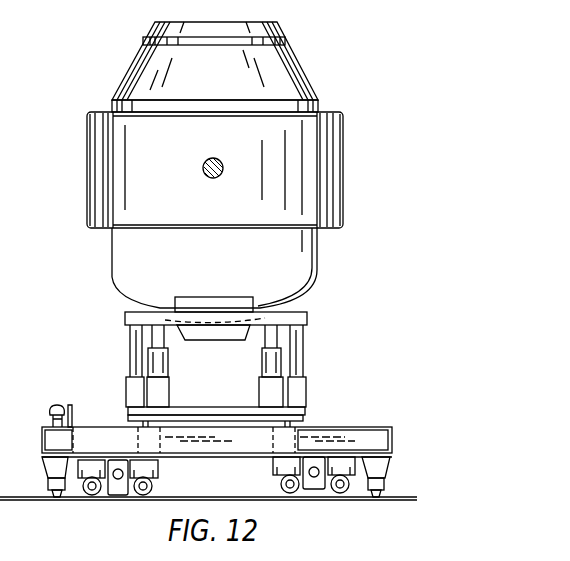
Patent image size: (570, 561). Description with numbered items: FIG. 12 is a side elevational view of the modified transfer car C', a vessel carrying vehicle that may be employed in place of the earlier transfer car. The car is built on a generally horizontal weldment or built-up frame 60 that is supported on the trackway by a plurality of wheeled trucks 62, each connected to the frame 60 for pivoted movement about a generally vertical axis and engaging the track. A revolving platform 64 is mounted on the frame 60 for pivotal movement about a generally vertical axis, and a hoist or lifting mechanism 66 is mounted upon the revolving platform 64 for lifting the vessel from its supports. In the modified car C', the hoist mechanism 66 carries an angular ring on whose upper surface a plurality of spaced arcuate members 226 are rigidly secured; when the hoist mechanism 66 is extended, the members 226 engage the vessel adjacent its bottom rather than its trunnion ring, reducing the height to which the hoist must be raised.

The arcuate members 226 is at (305, 300).
The hoist mechanism 66 is at (144, 353).
The revolving platform 64 is at (120, 409).
The frame 60 is at (60, 438).
The wheeled trucks 62 is at (116, 490).
The modified transfer car C' is at (208, 437).